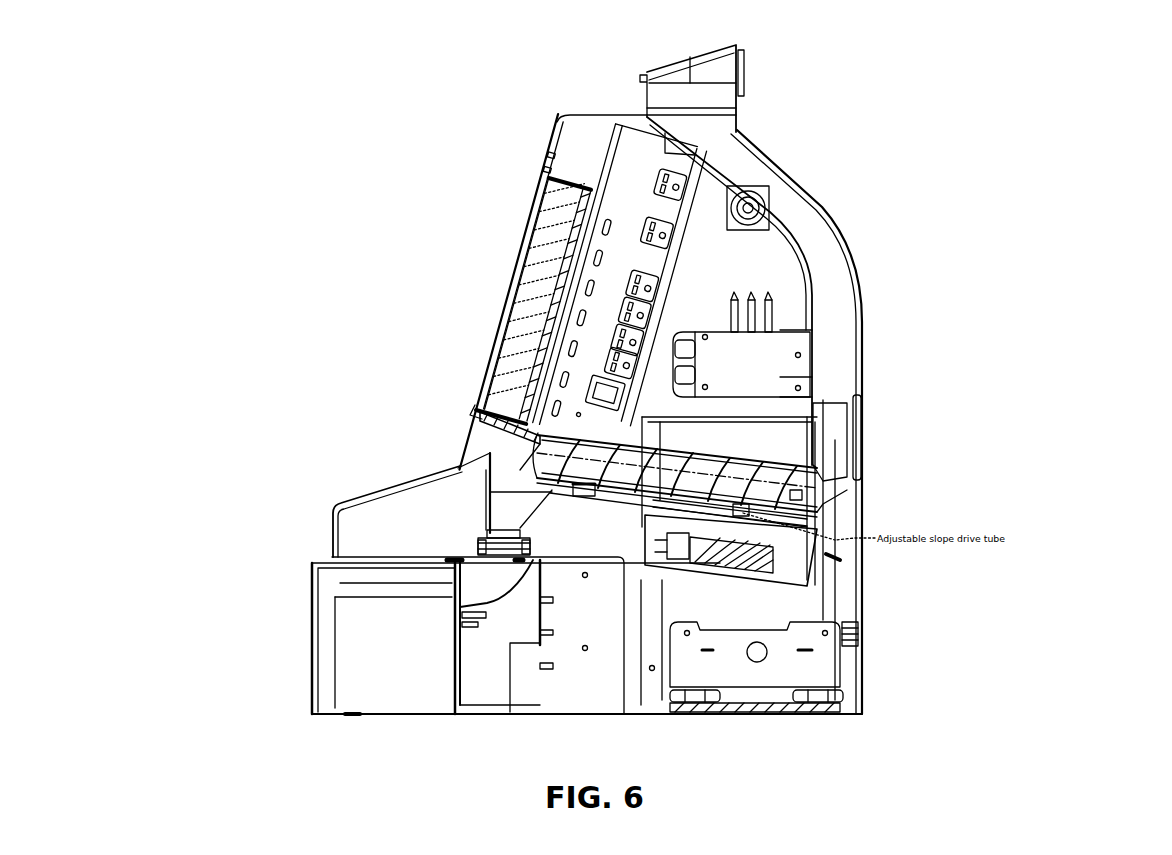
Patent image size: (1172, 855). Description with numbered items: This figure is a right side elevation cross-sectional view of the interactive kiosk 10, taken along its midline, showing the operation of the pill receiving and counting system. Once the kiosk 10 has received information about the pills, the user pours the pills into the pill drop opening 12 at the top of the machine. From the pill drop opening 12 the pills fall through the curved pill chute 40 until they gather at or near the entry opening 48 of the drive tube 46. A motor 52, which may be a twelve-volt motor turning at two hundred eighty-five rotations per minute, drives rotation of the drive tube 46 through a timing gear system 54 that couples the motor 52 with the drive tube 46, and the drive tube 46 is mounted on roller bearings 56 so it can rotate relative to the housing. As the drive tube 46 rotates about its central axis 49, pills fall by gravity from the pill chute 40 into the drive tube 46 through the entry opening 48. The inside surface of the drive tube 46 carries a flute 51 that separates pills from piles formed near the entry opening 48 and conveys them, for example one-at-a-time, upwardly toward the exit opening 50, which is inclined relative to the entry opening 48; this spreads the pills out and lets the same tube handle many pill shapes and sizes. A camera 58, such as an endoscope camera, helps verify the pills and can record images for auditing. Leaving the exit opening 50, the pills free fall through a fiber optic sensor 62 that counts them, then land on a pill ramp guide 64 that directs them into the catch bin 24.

The kiosk 10 is at (497, 176).
The pill drop opening 12 is at (735, 45).
The catch bin 24 is at (432, 598).
The pill chute 40 is at (862, 272).
The drive tube 46 is at (827, 450).
The entry opening 48 is at (837, 500).
The central axis 49 is at (703, 458).
The exit opening 50 is at (537, 468).
The flute 51 is at (800, 497).
The motor 52 is at (720, 567).
The timing gear system 54 is at (853, 640).
The roller bearings 56 is at (834, 557).
The camera 58 is at (480, 403).
The fiber optic sensor 62 is at (482, 536).
The pill ramp guide 64 is at (495, 607).